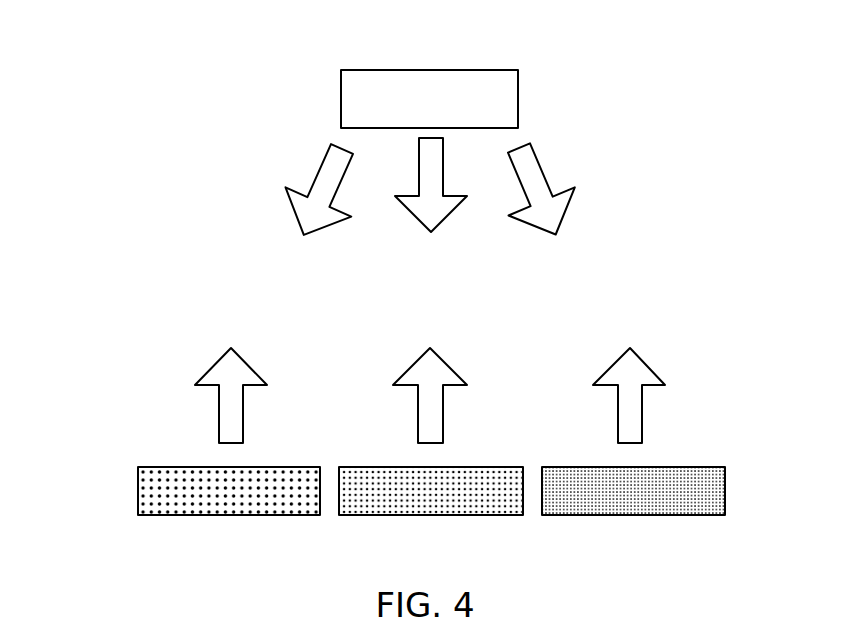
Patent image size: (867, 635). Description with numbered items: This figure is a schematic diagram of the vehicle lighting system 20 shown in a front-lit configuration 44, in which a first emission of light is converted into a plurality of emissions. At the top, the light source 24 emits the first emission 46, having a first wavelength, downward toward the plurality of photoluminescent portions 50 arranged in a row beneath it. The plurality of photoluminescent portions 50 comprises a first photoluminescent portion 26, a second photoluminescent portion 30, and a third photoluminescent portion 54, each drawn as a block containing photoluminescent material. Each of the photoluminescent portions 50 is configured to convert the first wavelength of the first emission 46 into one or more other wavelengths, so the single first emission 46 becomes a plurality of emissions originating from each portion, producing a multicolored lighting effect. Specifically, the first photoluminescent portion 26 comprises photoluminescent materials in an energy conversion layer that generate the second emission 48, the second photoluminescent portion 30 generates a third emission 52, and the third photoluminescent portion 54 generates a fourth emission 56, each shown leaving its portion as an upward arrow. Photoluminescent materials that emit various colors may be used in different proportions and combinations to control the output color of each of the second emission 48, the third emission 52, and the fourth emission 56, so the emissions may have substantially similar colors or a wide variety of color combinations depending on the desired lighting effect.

The lighting system 20 is at (105, 88).
The light source 24 is at (429, 99).
The first photoluminescent portion 26 is at (161, 472).
The second photoluminescent portion 30 is at (397, 472).
The front-lit configuration 44 is at (642, 270).
The first emission 46 is at (347, 175).
The second emission 48 is at (216, 372).
The plurality of photoluminescent portions 50 is at (590, 495).
The third emission 52 is at (420, 369).
The third photoluminescent portion 54 is at (590, 472).
The fourth emission 56 is at (617, 368).